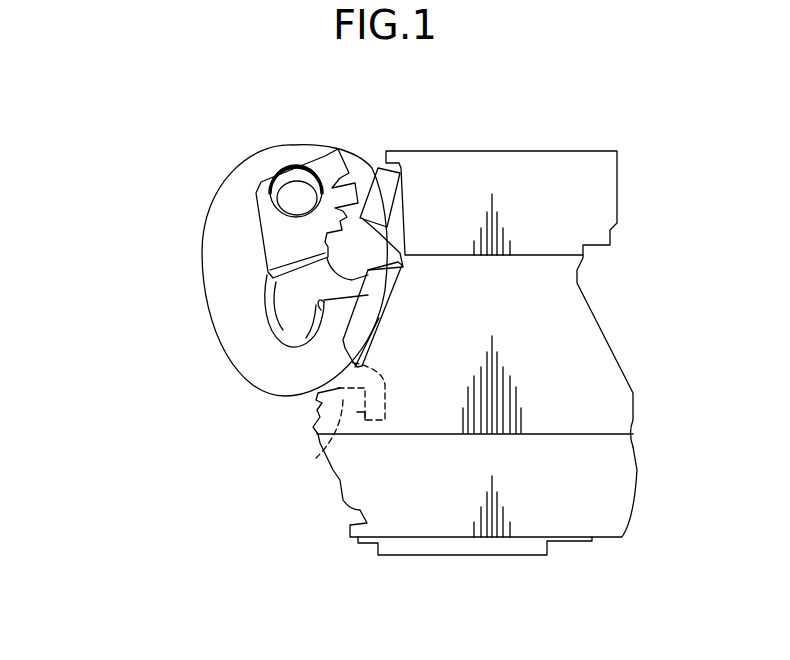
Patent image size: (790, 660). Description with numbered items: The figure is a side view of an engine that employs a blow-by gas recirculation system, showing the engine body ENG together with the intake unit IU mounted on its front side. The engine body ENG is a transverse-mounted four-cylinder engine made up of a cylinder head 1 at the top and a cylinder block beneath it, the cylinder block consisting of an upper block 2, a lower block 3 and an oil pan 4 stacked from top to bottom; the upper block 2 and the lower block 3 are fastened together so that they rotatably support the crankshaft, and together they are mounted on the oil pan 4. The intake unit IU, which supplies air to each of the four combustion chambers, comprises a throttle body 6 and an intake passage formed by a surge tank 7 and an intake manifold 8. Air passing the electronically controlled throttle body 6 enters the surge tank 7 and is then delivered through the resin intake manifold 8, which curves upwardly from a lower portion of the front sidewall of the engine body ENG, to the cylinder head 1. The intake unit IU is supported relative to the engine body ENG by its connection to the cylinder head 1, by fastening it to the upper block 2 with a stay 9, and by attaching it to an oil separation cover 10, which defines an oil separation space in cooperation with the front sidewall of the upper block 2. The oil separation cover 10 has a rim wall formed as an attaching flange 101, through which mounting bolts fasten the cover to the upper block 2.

The cylinder head 1 is at (618, 188).
The upper block 2 is at (605, 334).
The lower block 3 is at (637, 483).
The oil pan 4 is at (548, 550).
The throttle body 6 is at (350, 180).
The surge tank 7 is at (272, 288).
The intake manifold 8 is at (216, 203).
The stay 9 is at (318, 449).
The oil separation cover 10 is at (353, 360).
The attaching flange 101 is at (345, 328).
The engine body ENG is at (588, 140).
The intake unit IU is at (167, 263).